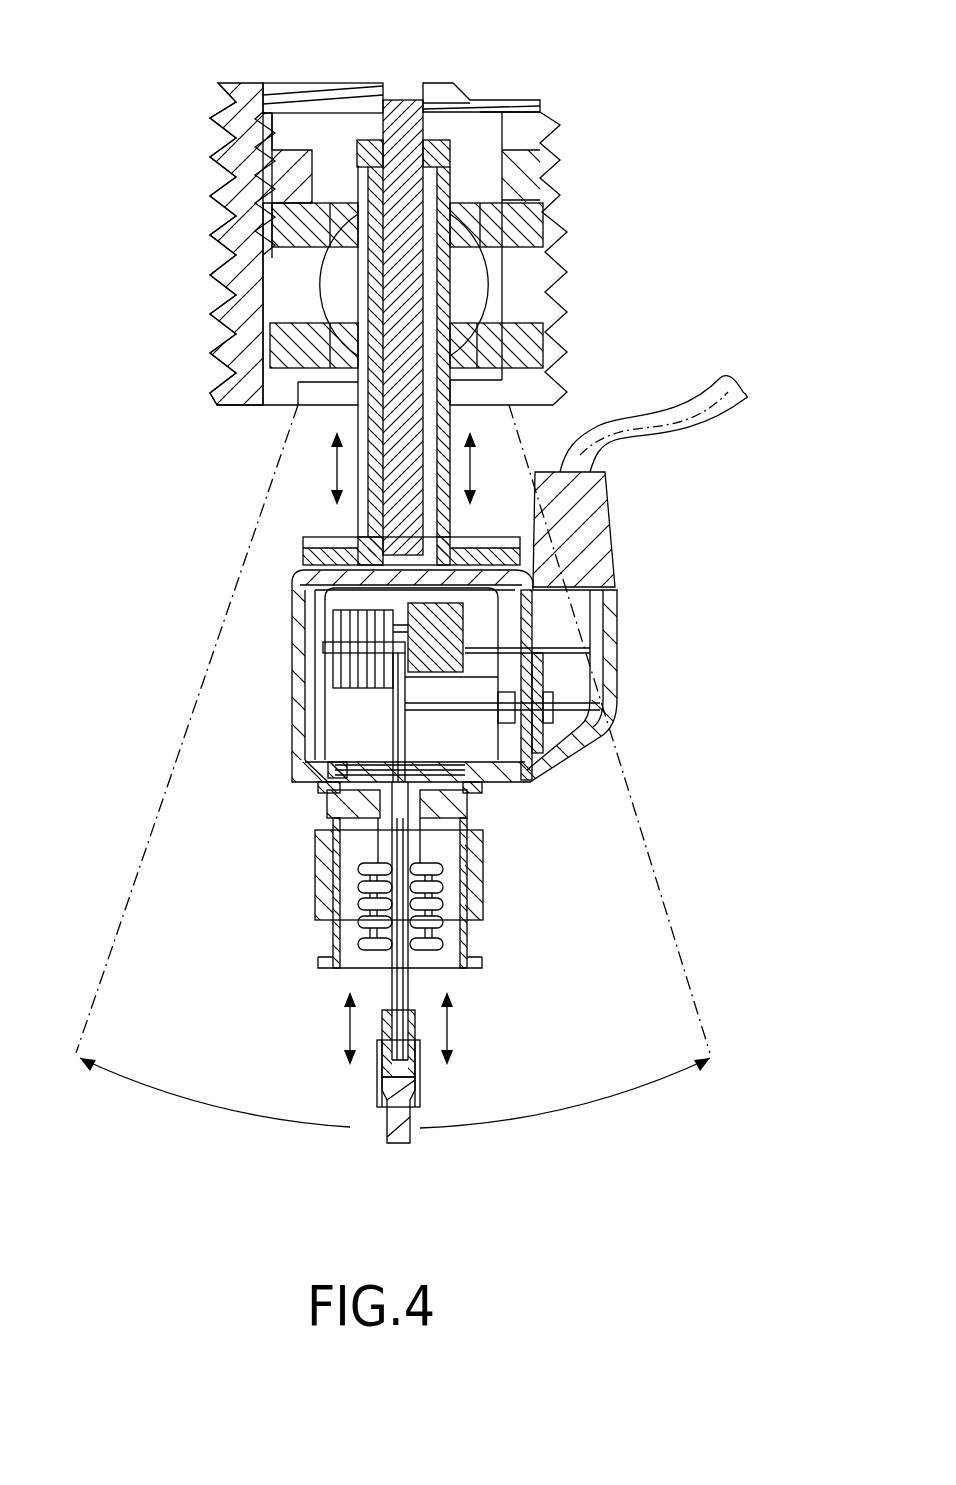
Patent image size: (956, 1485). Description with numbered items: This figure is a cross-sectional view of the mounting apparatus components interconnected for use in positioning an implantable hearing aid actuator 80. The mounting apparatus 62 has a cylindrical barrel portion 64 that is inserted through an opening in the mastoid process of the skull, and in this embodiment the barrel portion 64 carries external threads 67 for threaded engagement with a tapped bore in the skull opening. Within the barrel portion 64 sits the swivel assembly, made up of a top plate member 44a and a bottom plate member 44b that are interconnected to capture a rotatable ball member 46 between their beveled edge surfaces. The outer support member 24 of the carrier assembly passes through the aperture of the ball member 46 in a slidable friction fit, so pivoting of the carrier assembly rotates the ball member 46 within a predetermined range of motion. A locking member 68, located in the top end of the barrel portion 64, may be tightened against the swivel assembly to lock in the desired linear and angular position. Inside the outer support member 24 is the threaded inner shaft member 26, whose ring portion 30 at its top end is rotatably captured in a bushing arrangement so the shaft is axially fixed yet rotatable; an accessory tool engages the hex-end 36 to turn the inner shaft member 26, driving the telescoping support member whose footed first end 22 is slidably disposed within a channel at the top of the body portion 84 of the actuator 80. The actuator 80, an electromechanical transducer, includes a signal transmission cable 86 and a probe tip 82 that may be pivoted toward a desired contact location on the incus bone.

The first end 22 is at (307, 554).
The outer support member 24 is at (450, 425).
The inner shaft member 26 is at (400, 242).
The ring portion 30 is at (428, 147).
The hex-end 36 is at (398, 100).
The top plate member 44a is at (540, 226).
The bottom plate member 44b is at (540, 345).
The ball member 46 is at (490, 282).
The mounting apparatus 62 is at (367, 213).
The barrel portion 64 is at (262, 150).
The external threads 67 is at (232, 347).
The locking member 68 is at (540, 155).
The actuator 80 is at (419, 815).
The probe tip 82 is at (386, 1128).
The body portion 84 is at (617, 658).
The signal transmission cable 86 is at (612, 503).